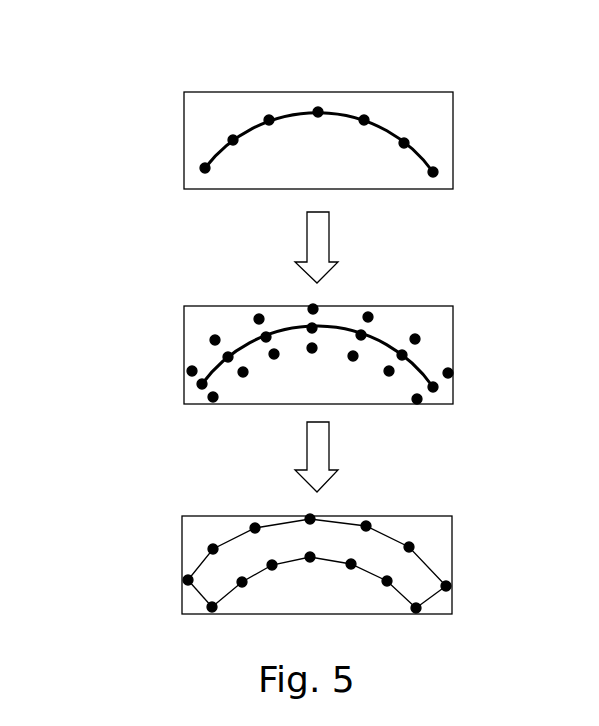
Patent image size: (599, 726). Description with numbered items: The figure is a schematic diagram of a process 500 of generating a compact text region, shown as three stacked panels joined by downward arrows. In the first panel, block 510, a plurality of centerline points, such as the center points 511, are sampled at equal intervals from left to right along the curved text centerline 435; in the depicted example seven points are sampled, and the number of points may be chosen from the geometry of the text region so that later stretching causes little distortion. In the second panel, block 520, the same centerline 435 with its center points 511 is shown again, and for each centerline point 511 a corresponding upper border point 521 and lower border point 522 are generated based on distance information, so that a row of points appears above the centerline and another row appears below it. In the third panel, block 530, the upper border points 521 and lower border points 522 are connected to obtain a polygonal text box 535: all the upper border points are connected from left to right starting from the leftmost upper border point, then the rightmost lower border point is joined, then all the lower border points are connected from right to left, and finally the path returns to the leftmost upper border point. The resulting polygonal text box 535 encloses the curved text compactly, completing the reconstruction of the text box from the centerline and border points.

The process of generating a compact text region 500 is at (167, 40).
The block 510 is at (415, 92).
The block 520 is at (415, 306).
The block 530 is at (413, 516).
The text centerline 435 is at (422, 151).
The center point 511 is at (203, 168).
The upper border point 521 is at (190, 370).
The lower border point 522 is at (210, 398).
The polygonal text box 535 is at (234, 540).